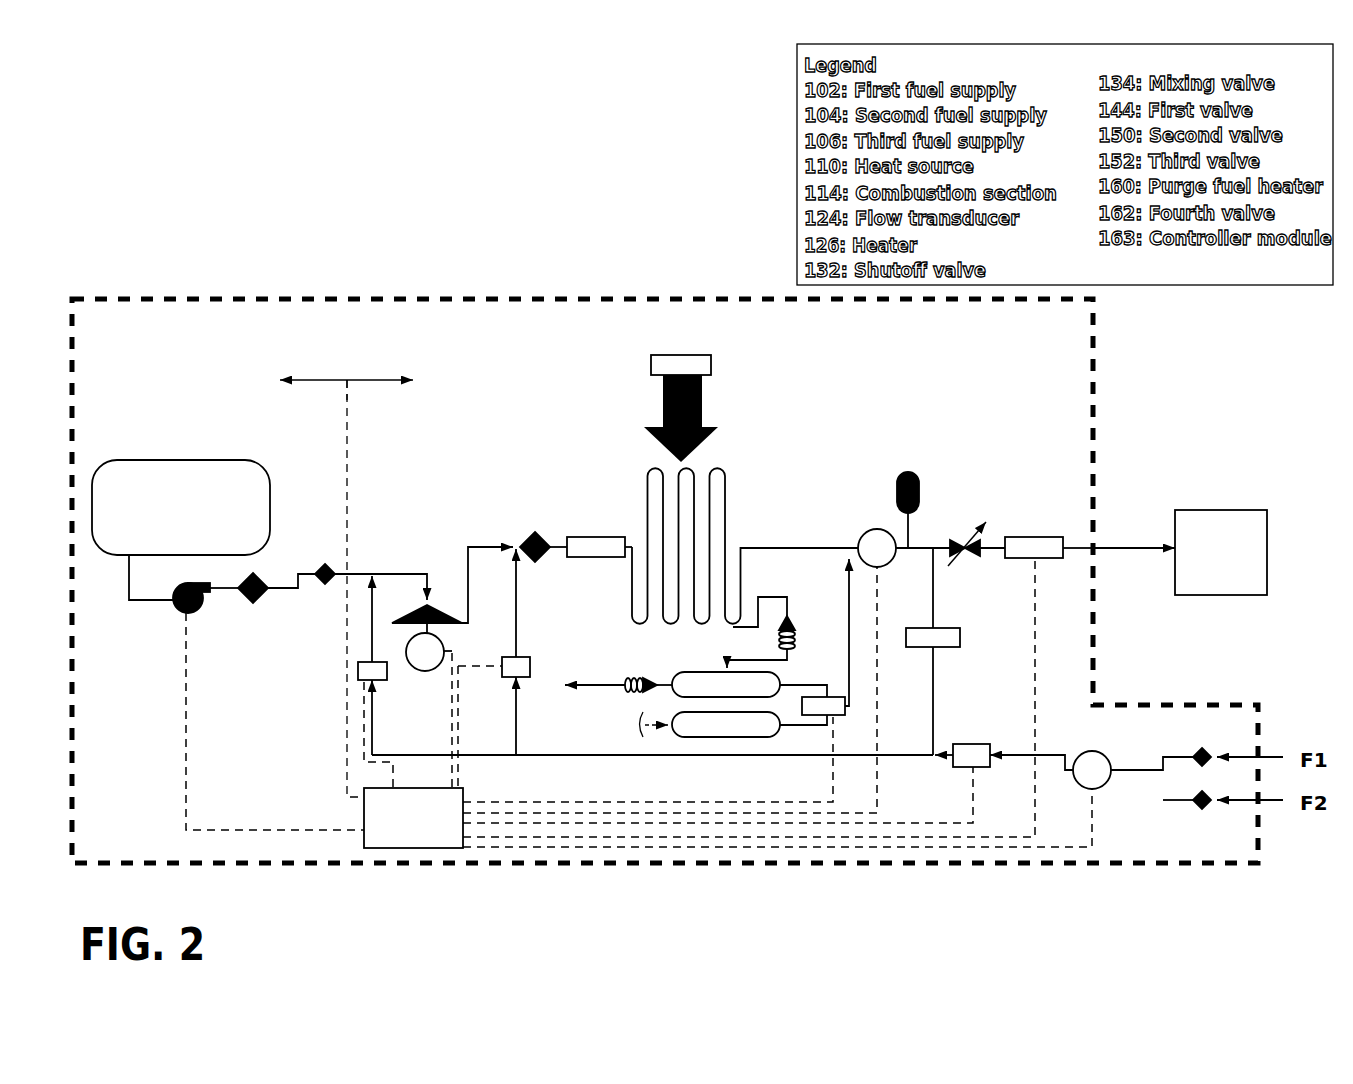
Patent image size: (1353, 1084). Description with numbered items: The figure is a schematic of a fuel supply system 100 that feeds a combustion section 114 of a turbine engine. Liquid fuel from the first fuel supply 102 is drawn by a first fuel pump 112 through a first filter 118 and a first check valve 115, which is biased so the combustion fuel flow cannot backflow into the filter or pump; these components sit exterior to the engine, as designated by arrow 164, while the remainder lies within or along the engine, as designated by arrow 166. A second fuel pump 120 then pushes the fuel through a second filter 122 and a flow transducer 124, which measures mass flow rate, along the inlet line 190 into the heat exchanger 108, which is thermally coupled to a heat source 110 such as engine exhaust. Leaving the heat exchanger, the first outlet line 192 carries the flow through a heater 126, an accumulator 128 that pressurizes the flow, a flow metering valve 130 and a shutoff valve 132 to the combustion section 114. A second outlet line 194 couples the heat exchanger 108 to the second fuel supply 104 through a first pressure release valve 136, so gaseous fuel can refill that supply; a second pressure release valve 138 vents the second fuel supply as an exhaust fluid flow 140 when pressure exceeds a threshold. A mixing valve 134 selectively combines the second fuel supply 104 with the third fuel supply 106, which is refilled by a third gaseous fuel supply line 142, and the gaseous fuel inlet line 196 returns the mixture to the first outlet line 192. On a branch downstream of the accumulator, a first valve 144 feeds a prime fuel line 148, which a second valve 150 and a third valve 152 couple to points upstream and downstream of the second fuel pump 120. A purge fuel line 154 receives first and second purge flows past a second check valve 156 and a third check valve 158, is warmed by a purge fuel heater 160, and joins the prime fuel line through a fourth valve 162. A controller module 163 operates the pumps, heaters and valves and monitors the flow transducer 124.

The fuel supply system 100 is at (514, 296).
The first fuel supply 102 is at (172, 460).
The second fuel supply 104 is at (727, 668).
The third fuel supply 106 is at (773, 737).
The heat exchanger 108 is at (727, 502).
The heat source 110 is at (712, 365).
The first fuel pump 112 is at (180, 612).
The combustion section 114 is at (1216, 508).
The first check valve 115 is at (325, 585).
The first filter 118 is at (252, 603).
The second fuel pump 120 is at (440, 613).
The second filter 122 is at (537, 535).
The flow transducer 124 is at (585, 537).
The heater 126 is at (872, 530).
The accumulator 128 is at (912, 470).
The flow metering valve 130 is at (955, 540).
The shutoff valve 132 is at (1032, 537).
The mixing valve 134 is at (835, 717).
The first pressure release valve 136 is at (790, 618).
The second pressure release valve 138 is at (633, 677).
The exhaust fluid flow 140 is at (590, 690).
The third gaseous fuel supply line 142 is at (645, 728).
The first valve 144 is at (962, 638).
The prime fuel line 148 is at (727, 757).
The second valve 150 is at (388, 676).
The third valve 152 is at (508, 655).
The purge fuel line 154 is at (1130, 775).
The second check valve 156 is at (1195, 752).
The third check valve 158 is at (1200, 808).
The purge fuel heater 160 is at (1078, 783).
The fourth valve 162 is at (963, 770).
The controller module 163 is at (392, 850).
The arrow designating portion exterior to the turbine engine 164 is at (346, 576).
The arrow designating portion within the turbine engine 166 is at (379, 378).
The inlet line 190 is at (556, 540).
The first outlet line 192 is at (785, 545).
The second outlet line 194 is at (748, 618).
The gaseous fuel inlet line 196 is at (856, 641).